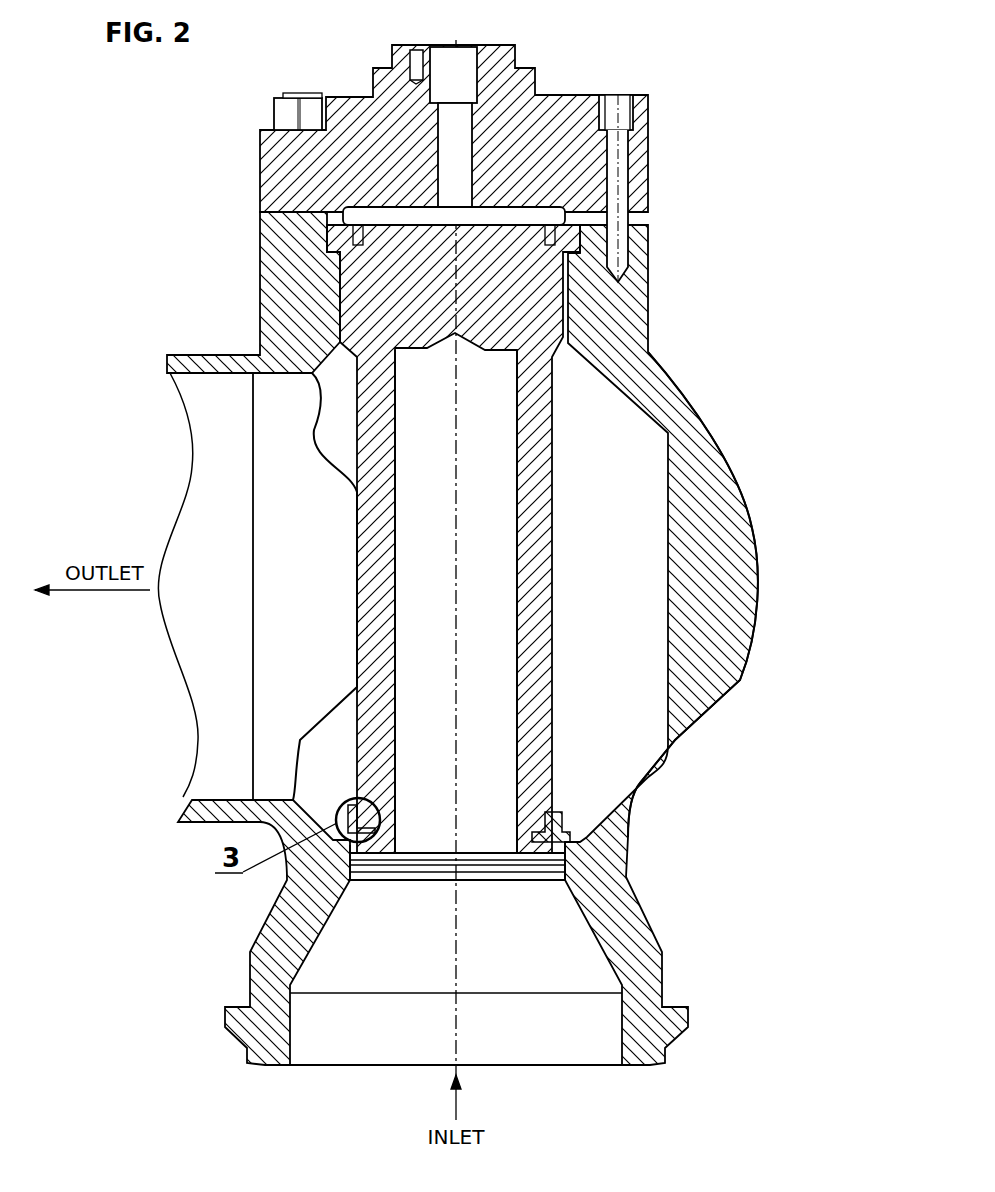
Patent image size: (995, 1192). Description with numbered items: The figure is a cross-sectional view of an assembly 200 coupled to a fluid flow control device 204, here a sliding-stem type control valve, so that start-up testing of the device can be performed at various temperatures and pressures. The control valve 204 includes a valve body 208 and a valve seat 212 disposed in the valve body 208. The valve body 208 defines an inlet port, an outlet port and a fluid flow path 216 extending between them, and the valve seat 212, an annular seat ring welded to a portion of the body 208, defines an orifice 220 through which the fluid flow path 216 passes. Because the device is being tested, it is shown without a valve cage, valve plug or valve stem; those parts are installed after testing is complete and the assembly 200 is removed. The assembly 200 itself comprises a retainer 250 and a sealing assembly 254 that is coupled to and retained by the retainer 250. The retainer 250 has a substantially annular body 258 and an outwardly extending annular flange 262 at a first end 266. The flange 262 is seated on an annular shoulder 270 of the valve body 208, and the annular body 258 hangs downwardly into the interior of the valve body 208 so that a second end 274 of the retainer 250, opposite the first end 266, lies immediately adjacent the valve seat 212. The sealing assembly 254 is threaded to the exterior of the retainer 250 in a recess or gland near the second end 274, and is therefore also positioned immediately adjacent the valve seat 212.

The assembly 200 is at (330, 642).
The fluid flow control device 204 is at (750, 404).
The valve body 208 is at (752, 525).
The valve seat 212 is at (558, 842).
The fluid flow path 216 is at (502, 893).
The orifice 220 is at (415, 872).
The retainer 250 is at (553, 633).
The sealing assembly 254 is at (540, 818).
The substantially annular body 258 is at (537, 412).
The outwardly extending annular flange 262 is at (573, 236).
The first end 266 is at (316, 238).
The annular shoulder 270 is at (607, 278).
The second end 274 is at (543, 858).